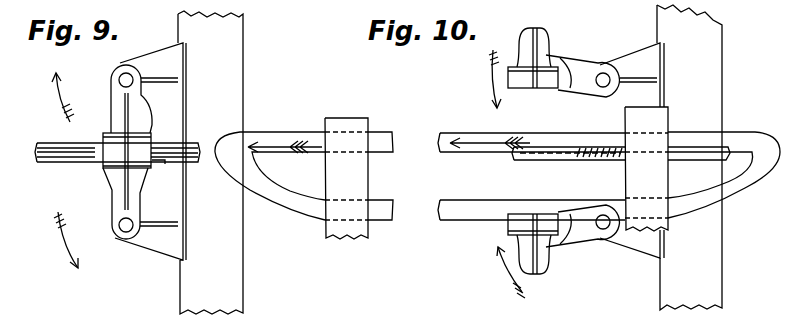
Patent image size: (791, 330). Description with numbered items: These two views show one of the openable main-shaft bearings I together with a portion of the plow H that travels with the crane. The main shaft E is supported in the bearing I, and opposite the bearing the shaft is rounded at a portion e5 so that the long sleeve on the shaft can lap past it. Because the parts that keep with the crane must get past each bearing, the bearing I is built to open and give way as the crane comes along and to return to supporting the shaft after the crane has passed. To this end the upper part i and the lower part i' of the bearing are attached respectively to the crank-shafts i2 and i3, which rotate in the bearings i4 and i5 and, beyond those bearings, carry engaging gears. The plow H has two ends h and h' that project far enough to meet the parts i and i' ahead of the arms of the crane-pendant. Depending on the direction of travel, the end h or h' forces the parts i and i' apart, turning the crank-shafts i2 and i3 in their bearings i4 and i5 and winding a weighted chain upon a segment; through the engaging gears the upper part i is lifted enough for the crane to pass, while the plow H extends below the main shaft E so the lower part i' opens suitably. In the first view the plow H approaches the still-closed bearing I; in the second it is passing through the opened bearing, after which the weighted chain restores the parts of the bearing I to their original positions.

In FIG. 9, the upper bearing part i is at (124, 152).
In FIG. 10, the upper bearing part i is at (533, 58).
In FIG. 9, the crank-shaft bearing i4 is at (119, 80).
In FIG. 10, the crank-shaft bearing i4 is at (626, 80).
In FIG. 9, the crank-shaft bearing i5 is at (119, 226).
In FIG. 10, the crank-shaft bearing i5 is at (603, 222).
In FIG. 9, the main-shaft bearing I is at (127, 150).
In FIG. 9, the main shaft E is at (107, 153).
In FIG. 10, the main shaft E is at (621, 154).
In FIG. 9, the rounded portion of main shaft e5 is at (158, 165).
In FIG. 9, the plow end h is at (270, 176).
In FIG. 9, the plow H is at (364, 178).
In FIG. 10, the plow H is at (553, 169).
In FIG. 10, the crank-shaft i2 is at (582, 76).
In FIG. 10, the lower bearing part i' is at (533, 244).
In FIG. 10, the crank-shaft i3 is at (582, 227).
In FIG. 10, the plow end h' is at (724, 175).